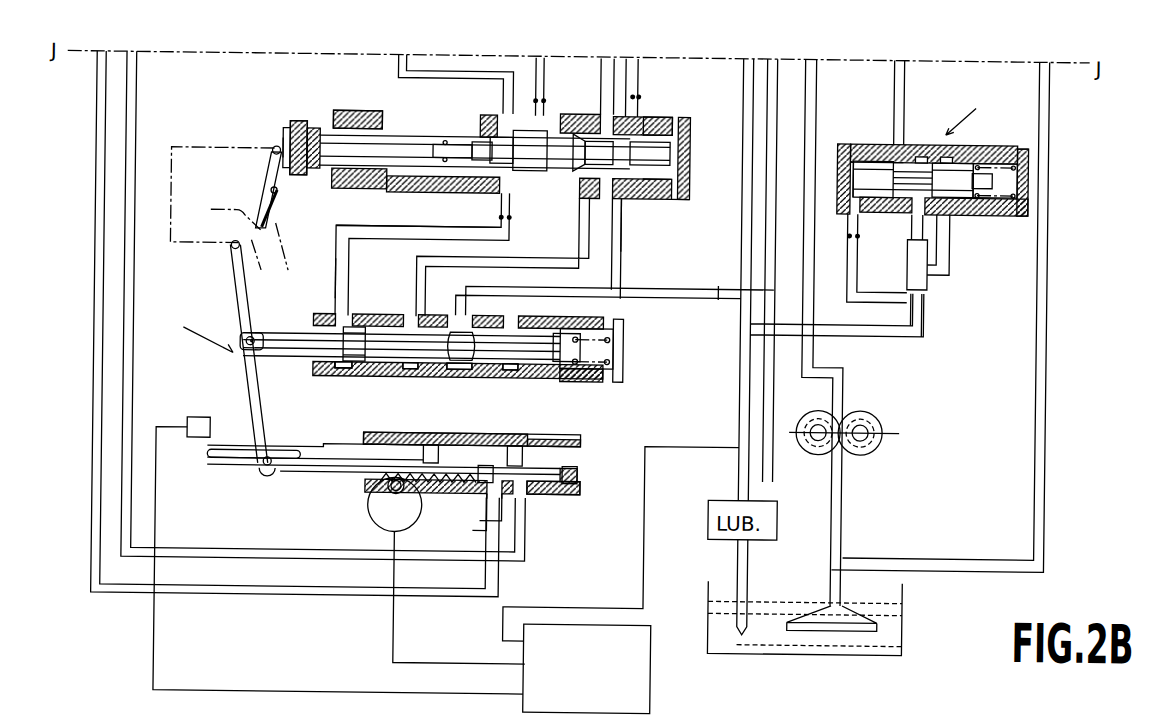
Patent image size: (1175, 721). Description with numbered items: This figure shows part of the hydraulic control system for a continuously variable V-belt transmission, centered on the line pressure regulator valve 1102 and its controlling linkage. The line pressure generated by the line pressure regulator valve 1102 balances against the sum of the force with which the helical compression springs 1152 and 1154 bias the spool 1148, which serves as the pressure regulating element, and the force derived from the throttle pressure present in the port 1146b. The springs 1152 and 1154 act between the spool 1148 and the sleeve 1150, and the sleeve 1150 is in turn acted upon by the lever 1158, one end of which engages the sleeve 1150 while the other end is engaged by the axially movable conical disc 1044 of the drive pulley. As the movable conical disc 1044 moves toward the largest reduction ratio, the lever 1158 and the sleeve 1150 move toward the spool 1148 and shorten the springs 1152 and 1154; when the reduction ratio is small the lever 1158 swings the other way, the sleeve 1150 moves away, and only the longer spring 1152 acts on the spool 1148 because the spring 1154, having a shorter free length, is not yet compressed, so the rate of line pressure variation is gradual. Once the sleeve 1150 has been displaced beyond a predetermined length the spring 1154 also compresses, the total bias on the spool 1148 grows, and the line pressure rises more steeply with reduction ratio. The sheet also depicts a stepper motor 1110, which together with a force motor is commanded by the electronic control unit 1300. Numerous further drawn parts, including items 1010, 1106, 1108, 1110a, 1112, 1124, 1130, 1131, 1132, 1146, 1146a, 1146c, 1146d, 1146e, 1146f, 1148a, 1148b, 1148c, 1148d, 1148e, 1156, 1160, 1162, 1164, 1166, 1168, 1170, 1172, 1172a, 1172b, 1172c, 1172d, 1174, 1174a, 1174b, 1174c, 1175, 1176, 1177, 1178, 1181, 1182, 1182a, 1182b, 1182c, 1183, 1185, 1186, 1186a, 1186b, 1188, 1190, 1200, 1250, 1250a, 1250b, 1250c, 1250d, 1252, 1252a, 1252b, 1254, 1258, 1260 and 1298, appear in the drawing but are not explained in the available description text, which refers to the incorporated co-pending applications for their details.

The gear pump 1010 is at (884, 401).
The movable conical disc 1044 is at (300, 250).
The line pressure regulator valve 1102 is at (727, 263).
The directional control valve 1106 is at (568, 404).
The rack valve 1108 is at (543, 510).
The stepper motor 1110 is at (345, 503).
The pinion shaft line 1110a is at (388, 515).
The linkage assembly 1112 is at (185, 338).
The pressure regulating valve assembly 1124 is at (987, 107).
The lubricant reservoir 1130 is at (907, 648).
The suction pipe 1131 is at (843, 632).
The conduit 1132 is at (822, 92).
The valve housing 1146 is at (588, 112).
The port 1146a is at (490, 196).
The port 1146b is at (518, 196).
The port 1146c is at (600, 200).
The port 1146d is at (606, 200).
The port 1146e is at (650, 215).
The port 1146f is at (675, 180).
The spool 1148 is at (670, 152).
The spool land 1148a is at (497, 140).
The spool land 1148b is at (505, 127).
The spool land 1148c is at (573, 135).
The spool land 1148d is at (622, 140).
The spool end 1148e is at (660, 135).
The sleeve 1150 is at (292, 128).
The helical compression spring 1152 is at (393, 133).
The helical compression spring 1154 is at (407, 143).
The piston 1156 is at (283, 170).
The lever 1158 is at (287, 157).
The conduit 1160 is at (372, 262).
The supply conduit 1162 is at (392, 67).
The conduit 1164 is at (738, 98).
The conduit 1166 is at (500, 217).
The conduit 1168 is at (537, 95).
The conduit 1170 is at (635, 87).
The valve body 1172 is at (360, 372).
The port 1172a is at (340, 370).
The port 1172b is at (410, 372).
The port 1172c is at (455, 372).
The port 1172d is at (505, 372).
The valve spool 1174 is at (293, 342).
The spool land 1174a is at (355, 330).
The spool land 1174b is at (458, 330).
The spool end 1174c is at (590, 345).
The end plate 1175 is at (592, 382).
The conduit 1176 is at (726, 282).
The conduit 1177 is at (508, 275).
The link 1178 is at (258, 380).
The pivot 1181 is at (245, 338).
The rack 1182 is at (342, 486).
The rack land 1182a is at (485, 465).
The rack end 1182b is at (570, 470).
The rack teeth 1182c is at (438, 492).
The lever 1183 is at (272, 145).
The pivot pin 1185 is at (260, 470).
The valve housing 1186 is at (578, 445).
The port 1186a is at (493, 497).
The port 1186b is at (550, 494).
The conduit 1188 is at (250, 603).
The conduit 1190 is at (140, 96).
The conduit 1200 is at (925, 555).
The valve housing 1250 is at (1025, 150).
The port 1250a is at (855, 148).
The port 1250b is at (898, 145).
The port 1250c is at (950, 148).
The port 1250d is at (1020, 150).
The valve spool 1252 is at (1020, 190).
The spool land 1252a is at (865, 185).
The conduit 1252b is at (935, 262).
The piston 1254 is at (978, 195).
The restrictor 1258 is at (910, 240).
The conduit 1260 is at (930, 282).
The sensor 1298 is at (198, 420).
The electronic control unit 1300 is at (656, 702).